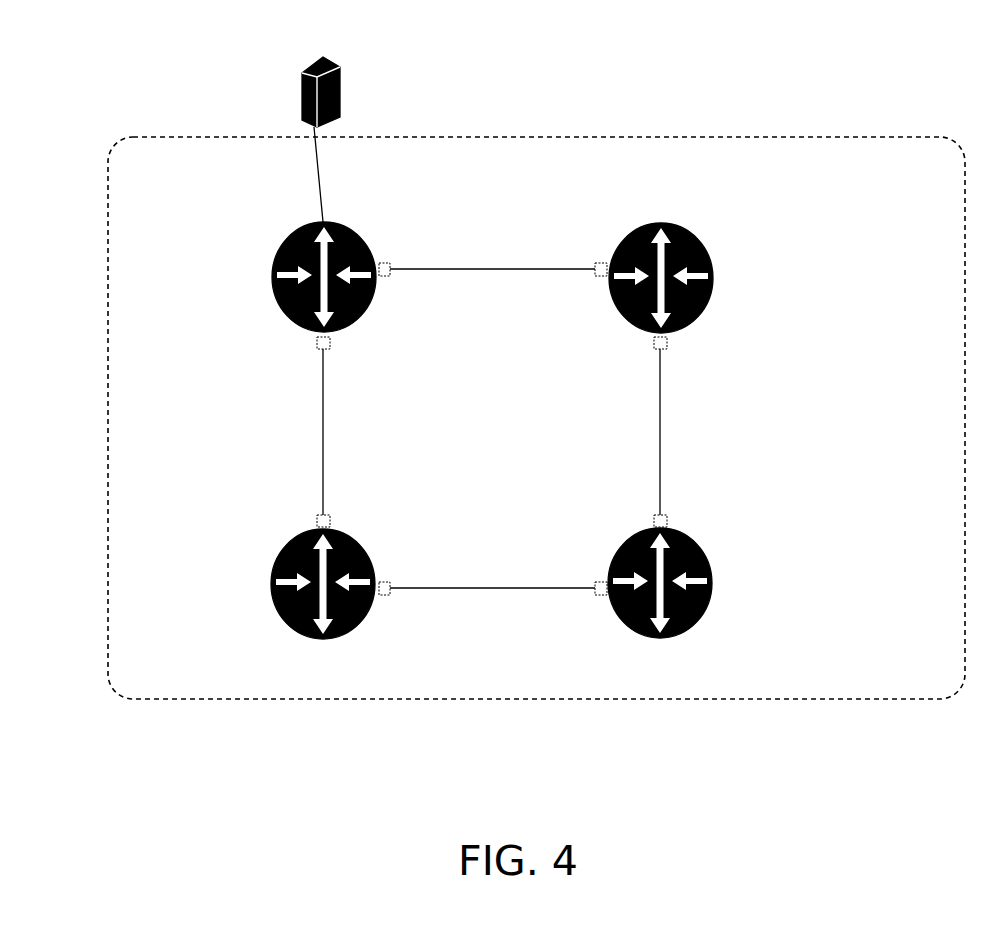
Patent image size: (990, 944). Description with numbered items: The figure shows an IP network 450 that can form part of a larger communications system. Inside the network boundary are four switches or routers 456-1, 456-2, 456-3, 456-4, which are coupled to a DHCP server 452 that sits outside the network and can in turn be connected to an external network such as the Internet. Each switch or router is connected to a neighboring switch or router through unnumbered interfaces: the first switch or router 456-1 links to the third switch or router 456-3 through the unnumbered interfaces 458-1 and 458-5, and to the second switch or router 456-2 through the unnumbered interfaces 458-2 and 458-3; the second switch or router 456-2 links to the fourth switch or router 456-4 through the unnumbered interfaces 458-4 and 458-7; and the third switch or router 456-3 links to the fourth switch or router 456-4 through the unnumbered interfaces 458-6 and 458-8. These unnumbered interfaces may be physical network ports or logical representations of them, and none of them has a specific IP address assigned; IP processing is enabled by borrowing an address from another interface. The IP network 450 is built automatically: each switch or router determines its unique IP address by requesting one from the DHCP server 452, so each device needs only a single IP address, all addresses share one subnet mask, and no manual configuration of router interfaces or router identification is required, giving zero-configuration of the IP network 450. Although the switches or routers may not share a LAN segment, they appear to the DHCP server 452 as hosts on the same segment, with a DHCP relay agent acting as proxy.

The IP network 450 is at (572, 691).
The DHCP server 452 is at (332, 56).
The switch or router 456-1 is at (343, 230).
The switch or router 456-2 is at (352, 540).
The switch or router 456-3 is at (688, 233).
The switch or router 456-4 is at (687, 538).
The unnumbered interface 458-1 is at (385, 263).
The unnumbered interface 458-2 is at (317, 346).
The unnumbered interface 458-3 is at (317, 518).
The unnumbered interface 458-4 is at (385, 583).
The unnumbered interface 458-5 is at (596, 265).
The unnumbered interface 458-6 is at (655, 346).
The unnumbered interface 458-7 is at (596, 584).
The unnumbered interface 458-8 is at (655, 518).